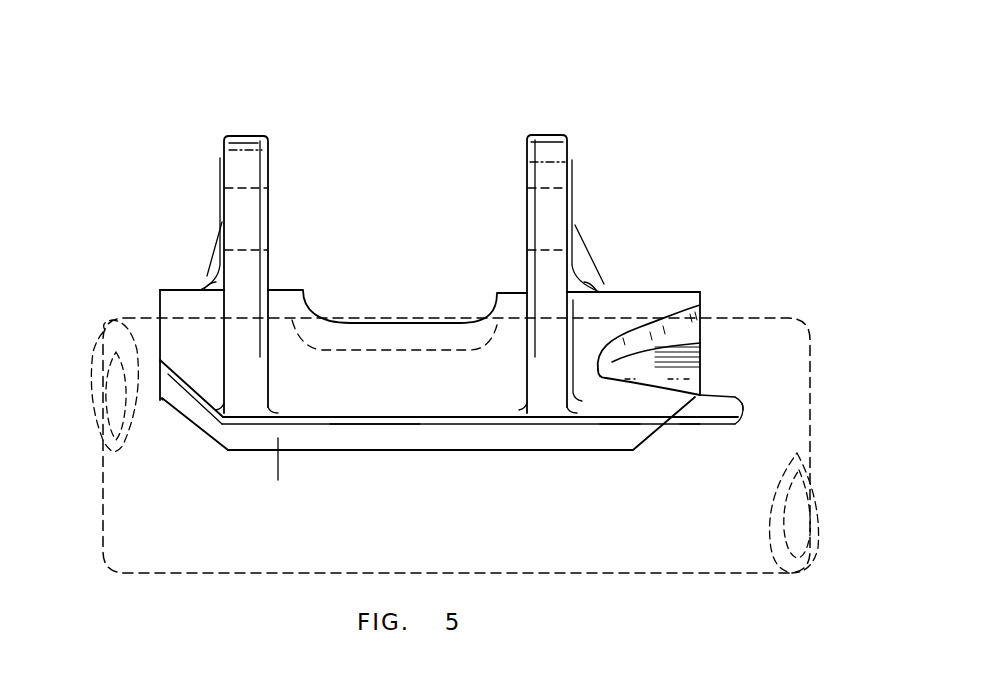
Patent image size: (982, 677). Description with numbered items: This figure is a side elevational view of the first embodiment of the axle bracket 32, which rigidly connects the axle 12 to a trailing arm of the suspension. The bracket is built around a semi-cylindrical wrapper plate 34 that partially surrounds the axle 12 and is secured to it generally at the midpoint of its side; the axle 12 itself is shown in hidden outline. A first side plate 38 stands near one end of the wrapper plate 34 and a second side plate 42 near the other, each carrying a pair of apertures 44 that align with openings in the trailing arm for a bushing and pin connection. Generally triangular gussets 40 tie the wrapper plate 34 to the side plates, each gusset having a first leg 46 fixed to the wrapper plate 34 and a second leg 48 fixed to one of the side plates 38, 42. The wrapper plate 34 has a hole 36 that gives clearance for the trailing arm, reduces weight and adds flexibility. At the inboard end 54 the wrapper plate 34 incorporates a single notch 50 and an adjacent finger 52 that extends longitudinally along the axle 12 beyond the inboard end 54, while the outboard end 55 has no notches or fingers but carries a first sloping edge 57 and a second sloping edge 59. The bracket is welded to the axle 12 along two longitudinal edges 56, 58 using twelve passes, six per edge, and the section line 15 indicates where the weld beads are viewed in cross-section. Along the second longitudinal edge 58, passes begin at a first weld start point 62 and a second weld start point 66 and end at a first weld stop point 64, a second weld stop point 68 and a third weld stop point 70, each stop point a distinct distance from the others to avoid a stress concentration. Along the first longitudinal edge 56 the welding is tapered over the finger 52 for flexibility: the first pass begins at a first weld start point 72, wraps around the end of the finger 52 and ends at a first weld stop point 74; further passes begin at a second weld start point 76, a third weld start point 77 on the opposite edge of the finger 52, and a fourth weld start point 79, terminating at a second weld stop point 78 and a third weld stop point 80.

The axle 12 is at (777, 310).
The section line 15 is at (306, 438).
The axle bracket 32 is at (720, 144).
The wrapper plate 34 is at (294, 308).
The hole 36 is at (403, 312).
The first side plate 38 is at (553, 150).
The gussets 40 is at (202, 290).
The second side plate 42 is at (252, 152).
The apertures 44 is at (238, 212).
The first leg 46 is at (208, 293).
The second leg 48 is at (205, 282).
The notch 50 is at (624, 353).
The finger 52 is at (713, 404).
The inboard end 54 is at (707, 299).
The outboard end 55 is at (160, 297).
The first longitudinal edge 56 is at (372, 425).
The first sloping edge 57 is at (164, 400).
The second longitudinal edge 58 is at (507, 445).
The second sloping edge 59 is at (165, 405).
The first weld start point 62 is at (161, 404).
The first weld stop point 64 is at (476, 454).
The second weld start point 66 is at (694, 403).
The second weld stop point 68 is at (337, 454).
The third weld stop point 70 is at (402, 454).
The first weld start point 72 is at (740, 393).
The first weld stop point 74 is at (473, 415).
The second weld start point 76 is at (163, 380).
The third weld start point 77 is at (698, 404).
The second weld stop point 78 is at (338, 414).
The fourth weld start point 79 is at (618, 431).
The third weld stop point 80 is at (392, 415).